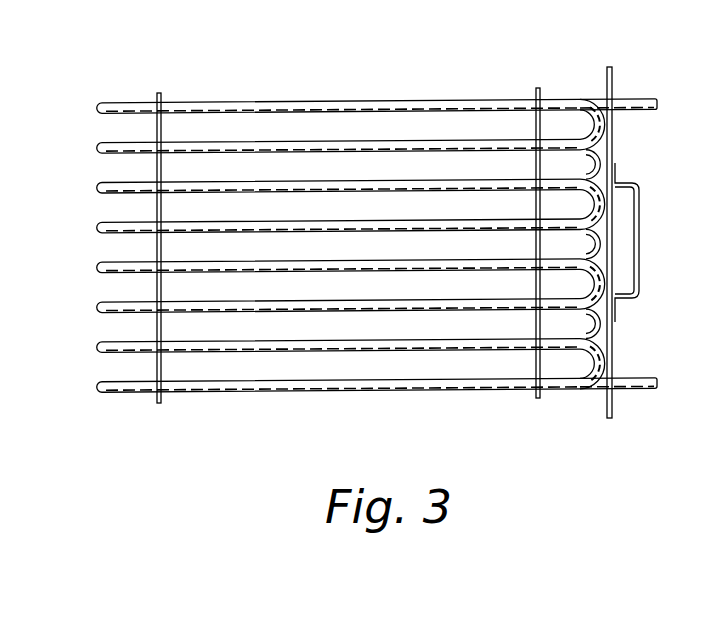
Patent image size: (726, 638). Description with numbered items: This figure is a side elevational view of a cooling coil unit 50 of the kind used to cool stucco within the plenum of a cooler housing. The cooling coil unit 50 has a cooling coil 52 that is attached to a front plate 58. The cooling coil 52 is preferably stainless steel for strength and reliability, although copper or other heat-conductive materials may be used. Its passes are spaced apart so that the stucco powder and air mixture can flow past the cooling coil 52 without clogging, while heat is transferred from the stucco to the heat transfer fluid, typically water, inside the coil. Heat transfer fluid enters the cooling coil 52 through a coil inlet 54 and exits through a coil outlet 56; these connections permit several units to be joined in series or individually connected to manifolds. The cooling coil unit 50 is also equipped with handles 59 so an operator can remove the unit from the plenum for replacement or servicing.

The cooling coil unit 50 is at (362, 72).
The cooling coil 52 is at (110, 227).
The coil inlet 54 is at (643, 395).
The coil outlet 56 is at (640, 99).
The front plate 58 is at (598, 398).
The handles 59 is at (641, 209).